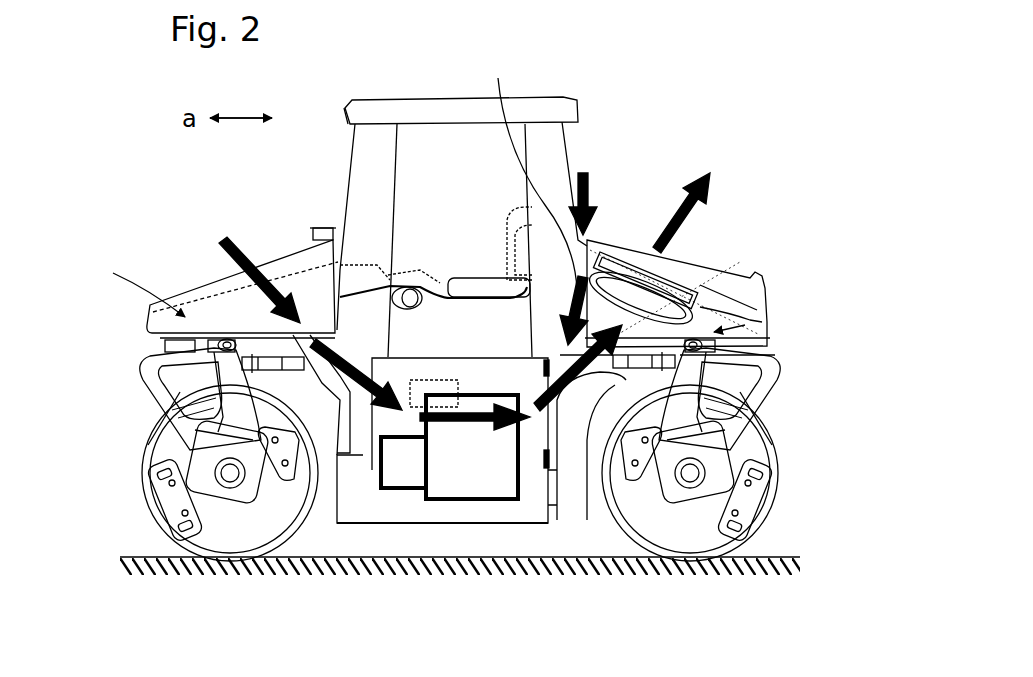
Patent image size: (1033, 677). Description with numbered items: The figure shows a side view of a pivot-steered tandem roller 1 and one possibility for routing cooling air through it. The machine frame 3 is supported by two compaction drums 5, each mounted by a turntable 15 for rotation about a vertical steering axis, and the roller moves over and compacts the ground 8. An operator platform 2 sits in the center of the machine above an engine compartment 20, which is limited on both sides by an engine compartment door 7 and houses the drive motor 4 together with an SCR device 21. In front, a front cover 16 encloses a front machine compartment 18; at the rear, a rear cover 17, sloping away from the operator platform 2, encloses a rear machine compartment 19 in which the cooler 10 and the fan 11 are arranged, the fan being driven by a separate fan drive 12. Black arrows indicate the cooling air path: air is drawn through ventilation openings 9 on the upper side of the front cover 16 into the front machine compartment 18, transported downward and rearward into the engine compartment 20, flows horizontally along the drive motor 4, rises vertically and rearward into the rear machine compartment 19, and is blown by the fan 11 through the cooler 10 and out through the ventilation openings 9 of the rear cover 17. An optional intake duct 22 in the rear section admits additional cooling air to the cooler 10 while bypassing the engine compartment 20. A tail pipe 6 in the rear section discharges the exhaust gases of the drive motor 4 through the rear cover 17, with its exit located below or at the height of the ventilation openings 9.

The tandem roller 1 is at (620, 147).
The operator platform 2 is at (472, 180).
The machine frame 3 is at (282, 282).
The drive motor 4 is at (457, 467).
The compaction drum 5 is at (208, 540).
The tail pipe 6 is at (748, 274).
The engine compartment door 7 is at (460, 375).
The ground 8 is at (240, 567).
The ventilation openings 9 is at (215, 300).
The cooler 10 is at (657, 283).
The fan 11 is at (762, 322).
The fan drive 12 is at (740, 413).
The turntable 15 is at (147, 357).
The front cover 16 is at (195, 312).
The rear cover 17 is at (705, 282).
The front machine compartment 18 is at (131, 286).
The rear machine compartment 19 is at (700, 347).
The engine compartment 20 is at (397, 500).
The SCR device 21 is at (388, 463).
The intake duct 22 is at (530, 186).